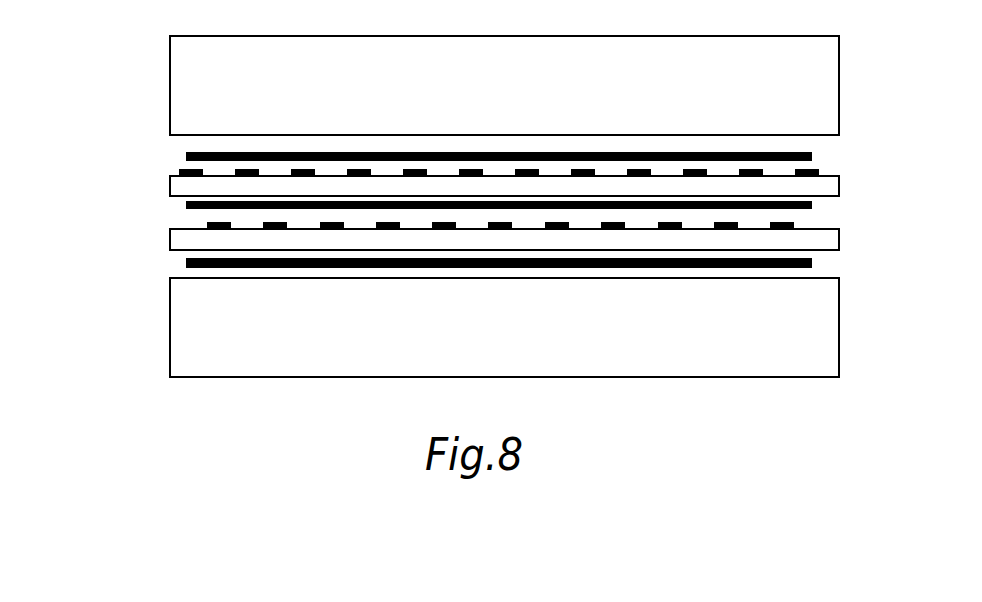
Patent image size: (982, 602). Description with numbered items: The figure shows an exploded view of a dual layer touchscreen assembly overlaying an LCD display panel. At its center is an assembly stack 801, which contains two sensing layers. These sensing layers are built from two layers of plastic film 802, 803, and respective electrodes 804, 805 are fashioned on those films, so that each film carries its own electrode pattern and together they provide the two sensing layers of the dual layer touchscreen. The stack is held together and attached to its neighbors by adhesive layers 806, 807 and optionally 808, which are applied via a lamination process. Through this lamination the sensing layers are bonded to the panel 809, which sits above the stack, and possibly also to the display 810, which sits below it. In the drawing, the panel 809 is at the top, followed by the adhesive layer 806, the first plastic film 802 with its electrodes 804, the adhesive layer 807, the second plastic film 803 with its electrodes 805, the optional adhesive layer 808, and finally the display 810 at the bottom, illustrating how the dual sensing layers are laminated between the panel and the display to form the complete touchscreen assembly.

The assembly stack 801 is at (67, 150).
The plastic film layer 802 is at (177, 183).
The plastic film layer 803 is at (836, 241).
The electrodes 804 is at (817, 172).
The electrodes 805 is at (207, 224).
The adhesive layer 806 is at (186, 156).
The adhesive layer 807 is at (812, 205).
The adhesive layer 808 is at (186, 262).
The panel 809 is at (184, 74).
The display 810 is at (178, 306).